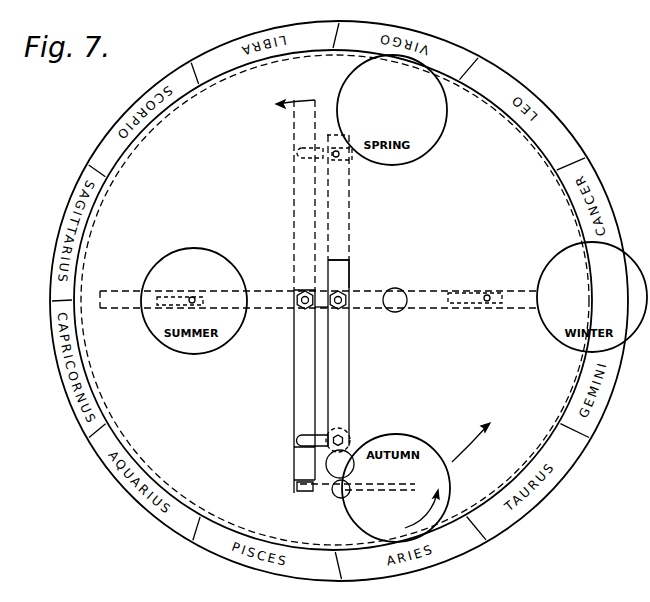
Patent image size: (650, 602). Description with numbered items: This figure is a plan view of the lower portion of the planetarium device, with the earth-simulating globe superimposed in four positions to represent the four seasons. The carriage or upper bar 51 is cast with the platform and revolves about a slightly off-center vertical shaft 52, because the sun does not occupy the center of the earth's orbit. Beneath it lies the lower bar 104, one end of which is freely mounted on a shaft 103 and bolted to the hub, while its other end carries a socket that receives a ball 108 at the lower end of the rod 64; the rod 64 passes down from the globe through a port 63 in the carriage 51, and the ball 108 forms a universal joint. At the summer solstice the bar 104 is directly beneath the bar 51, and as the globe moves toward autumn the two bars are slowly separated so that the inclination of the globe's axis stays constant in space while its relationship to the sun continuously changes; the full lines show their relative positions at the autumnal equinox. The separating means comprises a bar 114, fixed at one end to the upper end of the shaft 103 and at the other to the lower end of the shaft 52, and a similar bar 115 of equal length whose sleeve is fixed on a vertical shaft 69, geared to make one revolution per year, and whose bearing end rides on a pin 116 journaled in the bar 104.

The carriage 51 is at (349, 380).
The vertical shaft 52 is at (339, 295).
The port 63 is at (335, 490).
The rod 64 is at (381, 491).
The vertical shaft 69 is at (345, 432).
The shaft 103 is at (300, 292).
The lower bar 104 is at (297, 381).
The ball 108 is at (300, 488).
The bar 114 is at (330, 288).
The bar 115 is at (315, 443).
The pin 116 is at (303, 440).